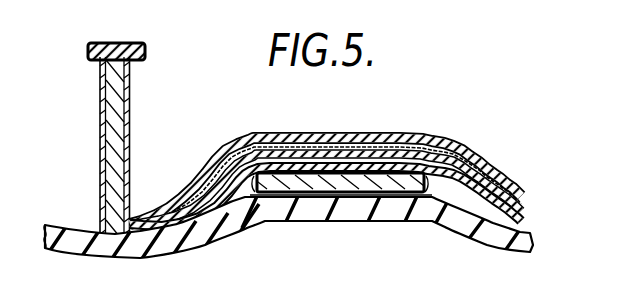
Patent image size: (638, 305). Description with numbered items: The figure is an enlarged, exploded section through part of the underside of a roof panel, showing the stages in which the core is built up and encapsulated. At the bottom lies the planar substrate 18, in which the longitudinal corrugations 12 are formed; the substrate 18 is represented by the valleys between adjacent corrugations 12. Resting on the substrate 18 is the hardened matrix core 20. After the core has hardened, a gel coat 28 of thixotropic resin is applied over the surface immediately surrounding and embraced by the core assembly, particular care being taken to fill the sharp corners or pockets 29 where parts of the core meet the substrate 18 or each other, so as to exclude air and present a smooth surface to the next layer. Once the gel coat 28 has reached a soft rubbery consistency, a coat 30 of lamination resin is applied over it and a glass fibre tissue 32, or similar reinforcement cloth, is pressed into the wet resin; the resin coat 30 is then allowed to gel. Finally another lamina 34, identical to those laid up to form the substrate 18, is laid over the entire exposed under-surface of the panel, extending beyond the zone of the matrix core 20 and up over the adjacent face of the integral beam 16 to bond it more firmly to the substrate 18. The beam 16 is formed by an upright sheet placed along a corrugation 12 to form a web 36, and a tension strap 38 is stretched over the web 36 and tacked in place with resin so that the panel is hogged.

The longitudinal corrugation 12 is at (117, 258).
The integral beam 16 is at (87, 146).
The substrate 18 is at (397, 212).
The matrix core 20 is at (334, 185).
The gel coat 28 is at (534, 231).
The pocket 29 is at (256, 197).
The coat of lamination resin 30 is at (528, 214).
The glass fibre tissue 32 is at (521, 207).
The lamina 34 is at (100, 133).
The web 36 is at (106, 191).
The tension strap 38 is at (100, 43).